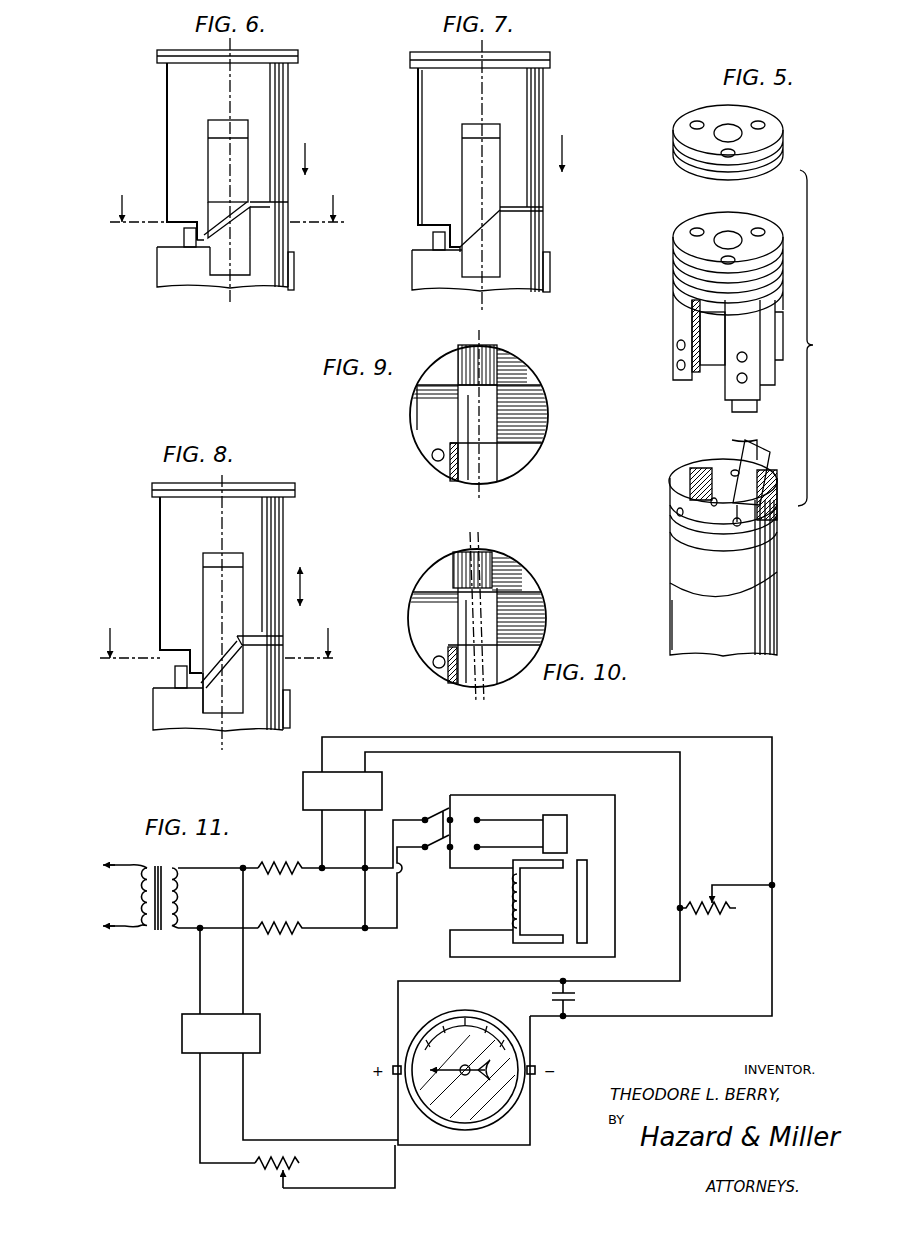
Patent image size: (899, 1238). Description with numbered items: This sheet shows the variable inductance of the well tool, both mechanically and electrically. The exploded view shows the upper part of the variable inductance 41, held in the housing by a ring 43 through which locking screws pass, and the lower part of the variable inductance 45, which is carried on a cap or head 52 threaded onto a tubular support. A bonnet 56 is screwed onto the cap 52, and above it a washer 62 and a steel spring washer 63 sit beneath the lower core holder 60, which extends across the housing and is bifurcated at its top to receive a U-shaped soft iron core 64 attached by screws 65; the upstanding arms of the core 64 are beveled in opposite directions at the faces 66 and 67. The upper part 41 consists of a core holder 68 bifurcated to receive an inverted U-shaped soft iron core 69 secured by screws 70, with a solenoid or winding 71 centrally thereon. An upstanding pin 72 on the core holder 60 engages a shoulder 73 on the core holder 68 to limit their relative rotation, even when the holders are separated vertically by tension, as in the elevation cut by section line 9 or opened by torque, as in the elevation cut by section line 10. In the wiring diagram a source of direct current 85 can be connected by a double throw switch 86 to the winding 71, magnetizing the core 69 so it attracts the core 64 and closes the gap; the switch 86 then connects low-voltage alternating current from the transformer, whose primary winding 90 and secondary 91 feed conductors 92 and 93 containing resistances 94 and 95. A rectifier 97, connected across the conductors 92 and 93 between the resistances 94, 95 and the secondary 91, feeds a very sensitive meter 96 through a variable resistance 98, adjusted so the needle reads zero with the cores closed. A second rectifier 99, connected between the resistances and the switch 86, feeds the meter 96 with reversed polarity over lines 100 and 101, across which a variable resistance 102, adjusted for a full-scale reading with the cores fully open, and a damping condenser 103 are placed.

In FIG. 8, the section line 9— 9 is at (217, 631).
In FIG. 6, the section line 10— 10 is at (225, 199).
In FIG. 6, the upper part of the variable inductance 41 is at (165, 92).
In FIG. 7, the upper part of the variable inductance 41 is at (547, 108).
In FIG. 8, the upper part of the variable inductance 41 is at (158, 523).
In FIG. 5, the upper part of the variable inductance 41 is at (672, 290).
In FIG. 5, the ring 43 is at (778, 135).
In FIG. 6, the lower part of the variable inductance 45 is at (158, 276).
In FIG. 7, the lower part of the variable inductance 45 is at (410, 282).
In FIG. 8, the lower part of the variable inductance 45 is at (292, 712).
In FIG. 9, the lower part of the variable inductance 45 is at (410, 424).
In FIG. 5, the lower part of the variable inductance 45 is at (666, 570).
In FIG. 5, the cap or head 52 is at (748, 625).
In FIG. 5, the bonnet 56 is at (752, 580).
In FIG. 6, the core holder 60 is at (276, 291).
In FIG. 7, the core holder 60 is at (548, 266).
In FIG. 8, the core holder 60 is at (160, 720).
In FIG. 9, the core holder 60 is at (527, 385).
In FIG. 10, the core holder 60 is at (418, 611).
In FIG. 5, the core holder 60 is at (708, 580).
In FIG. 5, the washer 62 is at (770, 548).
In FIG. 5, the steel spring washer 63 is at (670, 535).
In FIG. 6, the U-shaped soft iron core 64 is at (240, 266).
In FIG. 7, the U-shaped soft iron core 64 is at (468, 272).
In FIG. 8, the U-shaped soft iron core 64 is at (212, 715).
In FIG. 9, the U-shaped soft iron core 64 is at (505, 436).
In FIG. 10, the U-shaped soft iron core 64 is at (492, 634).
In FIG. 5, the U-shaped soft iron core 64 is at (773, 488).
In FIG. 11, the U-shaped soft iron core 64 is at (577, 922).
In FIG. 5, the screws 65 is at (675, 512).
In FIG. 6, the beveled face 66 is at (212, 236).
In FIG. 7, the beveled face 66 is at (485, 222).
In FIG. 8, the beveled face 66 is at (284, 641).
In FIG. 9, the beveled face 66 is at (487, 472).
In FIG. 10, the beveled face 66 is at (487, 685).
In FIG. 5, the beveled face 66 is at (762, 455).
In FIG. 9, the beveled face 67 is at (500, 362).
In FIG. 10, the beveled face 67 is at (488, 568).
In FIG. 5, the beveled face 67 is at (706, 465).
In FIG. 6, the core holder 68 is at (272, 117).
In FIG. 7, the core holder 68 is at (432, 93).
In FIG. 8, the core holder 68 is at (267, 543).
In FIG. 5, the core holder 68 is at (680, 310).
In FIG. 6, the inverted U-shaped soft iron core 69 is at (218, 155).
In FIG. 7, the inverted U-shaped soft iron core 69 is at (467, 158).
In FIG. 8, the inverted U-shaped soft iron core 69 is at (210, 585).
In FIG. 5, the inverted U-shaped soft iron core 69 is at (768, 390).
In FIG. 11, the inverted U-shaped soft iron core 69 is at (513, 920).
In FIG. 5, the screws 70 is at (677, 365).
In FIG. 5, the solenoid or winding 71 is at (705, 330).
In FIG. 11, the solenoid or winding 71 is at (521, 900).
In FIG. 6, the upstanding pin 72 is at (188, 238).
In FIG. 7, the upstanding pin 72 is at (436, 240).
In FIG. 8, the upstanding pin 72 is at (178, 677).
In FIG. 9, the upstanding pin 72 is at (432, 456).
In FIG. 10, the upstanding pin 72 is at (433, 662).
In FIG. 5, the upstanding pin 72 is at (737, 530).
In FIG. 6, the shoulder 73 is at (197, 222).
In FIG. 7, the shoulder 73 is at (452, 254).
In FIG. 8, the shoulder 73 is at (190, 650).
In FIG. 9, the shoulder 73 is at (450, 470).
In FIG. 10, the shoulder 73 is at (446, 676).
In FIG. 5, the shoulder 73 is at (742, 413).
In FIG. 11, the source of direct current 85 is at (567, 842).
In FIG. 11, the double throw switch 86 is at (437, 808).
In FIG. 11, the primary winding of a transformer 90 is at (130, 928).
In FIG. 11, the secondary of the transformer 91 is at (172, 928).
In FIG. 11, the conductor 92 is at (196, 870).
In FIG. 11, the conductor 93 is at (225, 930).
In FIG. 11, the resistance 94 is at (293, 865).
In FIG. 11, the resistance 95 is at (284, 932).
In FIG. 11, the meter 96 is at (490, 1030).
In FIG. 11, the rectifier 97 is at (182, 1025).
In FIG. 11, the variable resistance 98 is at (270, 1176).
In FIG. 11, the rectifier 99 is at (303, 789).
In FIG. 11, the line 100 is at (610, 752).
In FIG. 11, the line 101 is at (722, 737).
In FIG. 11, the variable resistance 102 is at (714, 915).
In FIG. 11, the condenser 103 is at (578, 997).